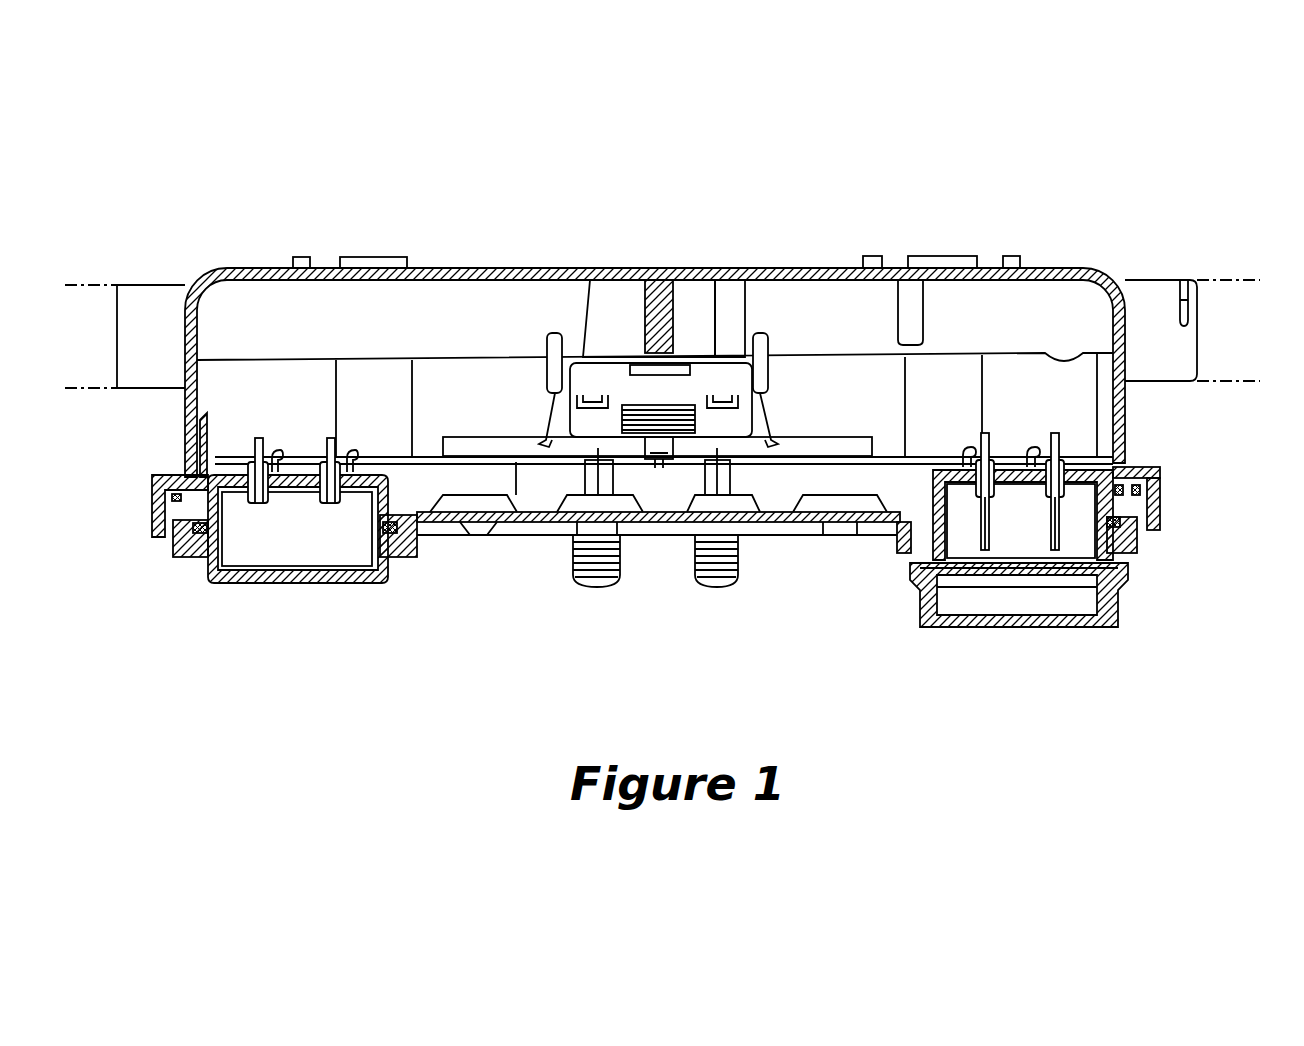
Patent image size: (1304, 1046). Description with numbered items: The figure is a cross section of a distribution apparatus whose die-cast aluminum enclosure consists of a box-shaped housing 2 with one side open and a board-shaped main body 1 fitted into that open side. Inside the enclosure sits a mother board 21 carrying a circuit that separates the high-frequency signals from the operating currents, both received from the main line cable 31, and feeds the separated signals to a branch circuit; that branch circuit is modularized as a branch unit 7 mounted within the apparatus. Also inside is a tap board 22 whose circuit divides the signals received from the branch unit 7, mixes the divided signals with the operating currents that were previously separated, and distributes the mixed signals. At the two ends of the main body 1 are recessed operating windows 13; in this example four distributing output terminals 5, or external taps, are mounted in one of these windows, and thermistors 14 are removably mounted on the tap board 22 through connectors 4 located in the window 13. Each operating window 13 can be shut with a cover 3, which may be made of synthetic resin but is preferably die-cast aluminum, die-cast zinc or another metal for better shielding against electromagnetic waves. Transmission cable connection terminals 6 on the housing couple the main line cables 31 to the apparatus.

The main body 1 is at (543, 530).
The housing 2 is at (615, 268).
The cover 3 is at (203, 578).
The connector 4 is at (257, 488).
The distributing output terminal 5 is at (693, 557).
The transmission cable connection terminal 6 is at (173, 297).
The branch unit 7 is at (602, 380).
The operating window 13 is at (320, 550).
The thermistor 14 is at (980, 537).
The mother board 21 is at (790, 365).
The tap board 22 is at (888, 453).
The main line cable 31 is at (107, 291).